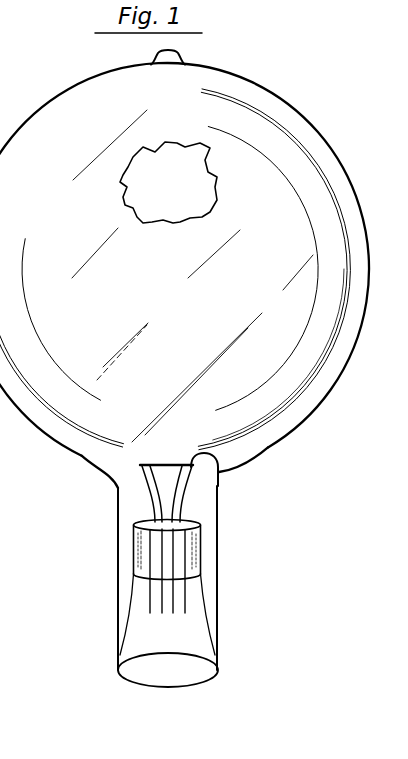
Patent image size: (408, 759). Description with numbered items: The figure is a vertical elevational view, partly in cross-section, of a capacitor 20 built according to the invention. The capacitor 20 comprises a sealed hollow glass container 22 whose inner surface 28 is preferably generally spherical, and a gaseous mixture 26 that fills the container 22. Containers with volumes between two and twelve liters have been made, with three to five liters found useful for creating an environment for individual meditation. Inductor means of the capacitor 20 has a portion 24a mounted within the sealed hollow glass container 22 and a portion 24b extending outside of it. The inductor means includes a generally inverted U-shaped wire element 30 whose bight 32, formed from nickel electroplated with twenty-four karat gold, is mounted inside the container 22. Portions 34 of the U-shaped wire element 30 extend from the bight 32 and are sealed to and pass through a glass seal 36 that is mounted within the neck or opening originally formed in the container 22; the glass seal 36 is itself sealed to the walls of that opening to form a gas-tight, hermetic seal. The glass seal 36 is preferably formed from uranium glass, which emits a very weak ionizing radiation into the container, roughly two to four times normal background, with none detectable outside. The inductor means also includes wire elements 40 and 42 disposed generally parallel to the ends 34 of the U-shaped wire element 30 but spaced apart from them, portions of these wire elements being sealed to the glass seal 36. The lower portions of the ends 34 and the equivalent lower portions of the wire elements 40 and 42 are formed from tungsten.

The capacitor 20 is at (272, 497).
The sealed hollow glass container 22 is at (310, 418).
The portion of inductor means mounted within container 24a is at (140, 491).
The portion of inductor means extending outside container 24b is at (146, 593).
The gaseous mixture 26 is at (178, 193).
The inner surface 28 is at (331, 377).
The U-shaped wire element 30 is at (219, 473).
The bight 32 is at (140, 468).
The portions of U-shaped wire element 34 is at (150, 548).
The glass seal 36 is at (196, 543).
The wire element 40 is at (155, 505).
The wire element 42 is at (184, 499).